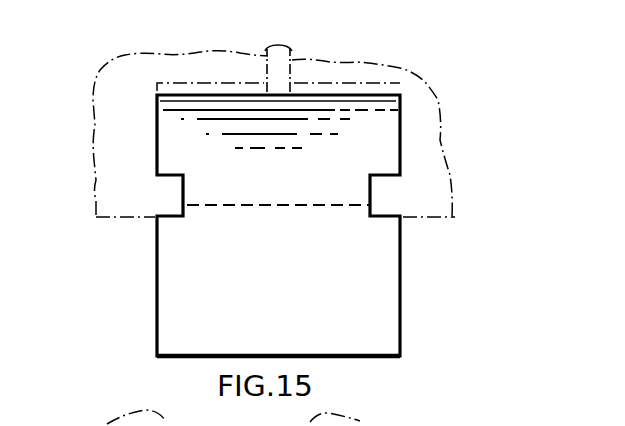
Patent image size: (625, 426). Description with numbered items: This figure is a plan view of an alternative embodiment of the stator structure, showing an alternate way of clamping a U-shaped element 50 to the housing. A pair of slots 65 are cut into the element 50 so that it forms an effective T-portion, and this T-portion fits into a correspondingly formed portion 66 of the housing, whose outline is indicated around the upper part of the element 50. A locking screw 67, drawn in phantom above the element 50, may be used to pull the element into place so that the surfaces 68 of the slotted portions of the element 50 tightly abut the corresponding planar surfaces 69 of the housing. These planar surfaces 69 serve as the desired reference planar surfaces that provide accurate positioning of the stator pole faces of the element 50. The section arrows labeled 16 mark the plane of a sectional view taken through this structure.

The element 50 is at (141, 318).
The slots 65 is at (170, 201).
The correspondingly formed portion of the housing 66 is at (105, 93).
The locking screw 67 is at (292, 62).
The surfaces of the slotted portions 68 is at (164, 181).
The planar surfaces of the housing 69 is at (177, 182).
The section line 16- 16 is at (380, 35).